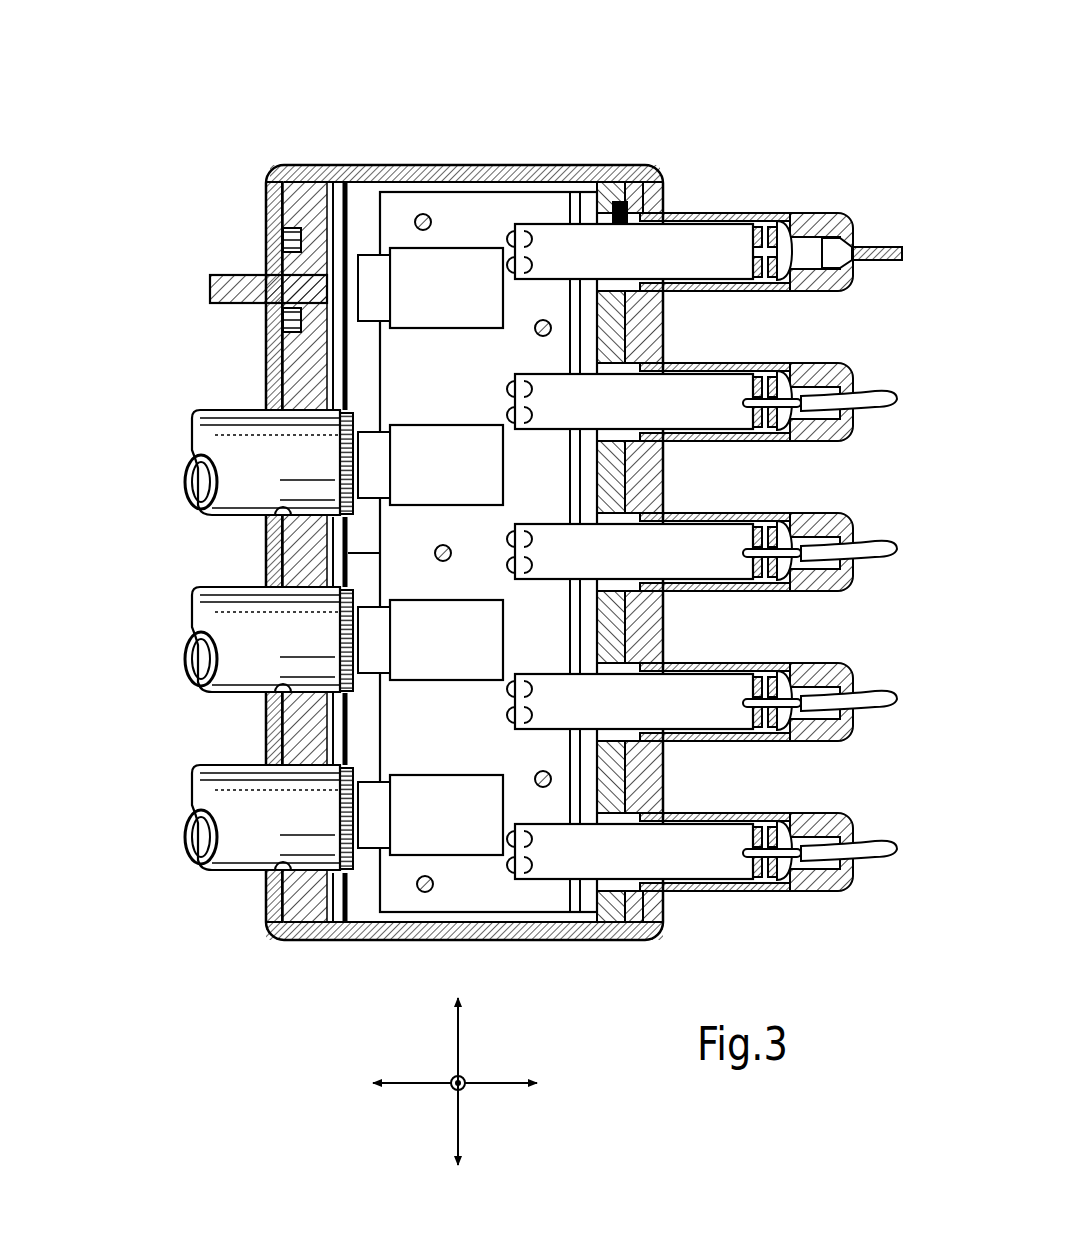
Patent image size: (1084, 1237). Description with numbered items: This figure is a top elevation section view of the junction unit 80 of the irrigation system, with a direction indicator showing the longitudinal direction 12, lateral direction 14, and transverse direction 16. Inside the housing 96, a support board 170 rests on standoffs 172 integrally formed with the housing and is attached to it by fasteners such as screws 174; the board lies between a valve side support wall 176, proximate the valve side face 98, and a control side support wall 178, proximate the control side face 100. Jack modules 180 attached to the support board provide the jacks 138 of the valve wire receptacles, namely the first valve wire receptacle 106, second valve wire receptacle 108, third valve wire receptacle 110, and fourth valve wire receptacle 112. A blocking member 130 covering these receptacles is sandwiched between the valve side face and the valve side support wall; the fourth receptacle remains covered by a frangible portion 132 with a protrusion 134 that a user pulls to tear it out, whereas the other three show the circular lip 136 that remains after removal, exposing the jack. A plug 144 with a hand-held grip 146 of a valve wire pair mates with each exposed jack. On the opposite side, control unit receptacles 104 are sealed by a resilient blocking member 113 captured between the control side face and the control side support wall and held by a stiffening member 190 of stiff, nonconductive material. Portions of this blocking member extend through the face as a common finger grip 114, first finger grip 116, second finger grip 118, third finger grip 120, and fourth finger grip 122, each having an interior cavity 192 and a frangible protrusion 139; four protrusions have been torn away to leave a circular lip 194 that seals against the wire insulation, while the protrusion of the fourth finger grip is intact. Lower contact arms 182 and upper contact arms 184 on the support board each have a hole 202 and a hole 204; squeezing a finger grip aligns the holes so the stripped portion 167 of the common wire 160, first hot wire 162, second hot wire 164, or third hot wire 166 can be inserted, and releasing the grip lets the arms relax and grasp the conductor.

The longitudinal direction 12 is at (478, 1083).
The lateral direction 14 is at (458, 1040).
The transverse direction 16 is at (452, 1090).
The junction unit 80 is at (448, 68).
The housing 96 is at (572, 148).
The valve side face 98 is at (268, 190).
The control side face 100 is at (672, 190).
The control unit receptacles 104 is at (690, 928).
The first valve wire receptacle 106 is at (270, 890).
The second valve wire receptacle 108 is at (270, 705).
The third valve wire receptacle 110 is at (260, 505).
The fourth valve wire receptacle 112 is at (290, 242).
The blocking member 113 is at (640, 925).
The common finger grip 114 is at (830, 811).
The first finger grip 116 is at (835, 661).
The second finger grip 118 is at (835, 511).
The third finger grip 120 is at (835, 362).
The fourth finger grip 122 is at (813, 205).
The blocking member 130 is at (320, 165).
The frangible portion 132 is at (290, 325).
The protrusion 134 is at (235, 276).
The circular lip 136 is at (300, 340).
The jack 138 is at (355, 165).
The protrusion 139 is at (880, 248).
The plug 144 is at (175, 530).
The grip 146 is at (235, 410).
The common wire 160 is at (890, 840).
The first hot wire 162 is at (878, 690).
The second hot wire 164 is at (870, 540).
The third hot wire 166 is at (880, 385).
The stripped portion 167 is at (744, 403).
The support board 170 is at (455, 165).
The standoffs 172 is at (412, 165).
The screws 174 is at (432, 165).
The valve side support wall 176 is at (337, 165).
The control side support wall 178 is at (589, 165).
The jack modules 180 is at (412, 340).
The lower contact arms 182 is at (518, 165).
The upper contact arms 184 is at (605, 165).
The stiffening member 190 is at (625, 165).
The interior cavity 192 is at (785, 238).
The circular lip 194 is at (830, 220).
The hole 202 is at (757, 395).
The hole 204 is at (772, 240).